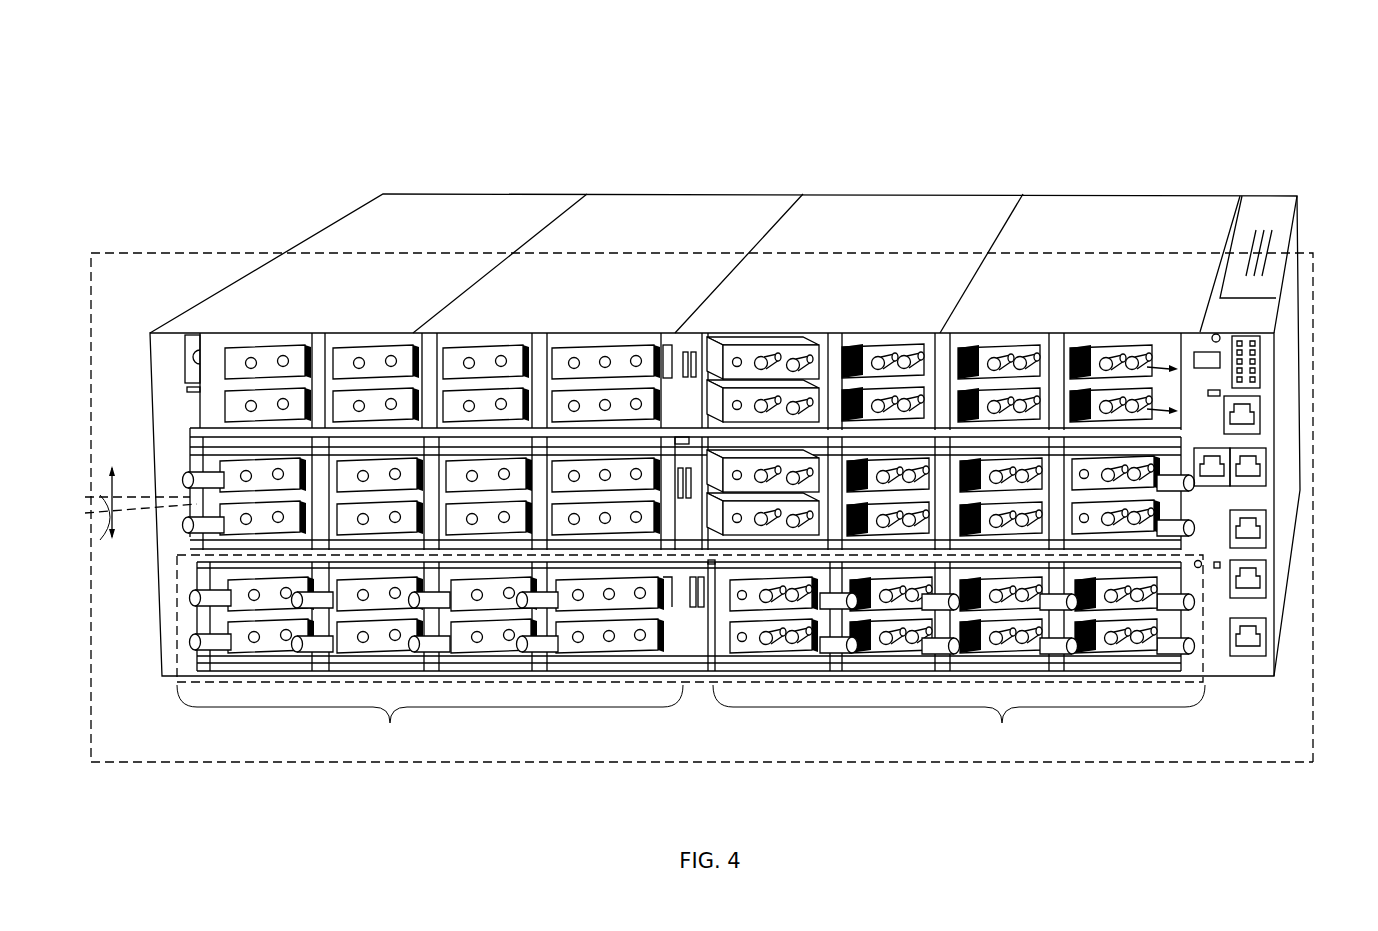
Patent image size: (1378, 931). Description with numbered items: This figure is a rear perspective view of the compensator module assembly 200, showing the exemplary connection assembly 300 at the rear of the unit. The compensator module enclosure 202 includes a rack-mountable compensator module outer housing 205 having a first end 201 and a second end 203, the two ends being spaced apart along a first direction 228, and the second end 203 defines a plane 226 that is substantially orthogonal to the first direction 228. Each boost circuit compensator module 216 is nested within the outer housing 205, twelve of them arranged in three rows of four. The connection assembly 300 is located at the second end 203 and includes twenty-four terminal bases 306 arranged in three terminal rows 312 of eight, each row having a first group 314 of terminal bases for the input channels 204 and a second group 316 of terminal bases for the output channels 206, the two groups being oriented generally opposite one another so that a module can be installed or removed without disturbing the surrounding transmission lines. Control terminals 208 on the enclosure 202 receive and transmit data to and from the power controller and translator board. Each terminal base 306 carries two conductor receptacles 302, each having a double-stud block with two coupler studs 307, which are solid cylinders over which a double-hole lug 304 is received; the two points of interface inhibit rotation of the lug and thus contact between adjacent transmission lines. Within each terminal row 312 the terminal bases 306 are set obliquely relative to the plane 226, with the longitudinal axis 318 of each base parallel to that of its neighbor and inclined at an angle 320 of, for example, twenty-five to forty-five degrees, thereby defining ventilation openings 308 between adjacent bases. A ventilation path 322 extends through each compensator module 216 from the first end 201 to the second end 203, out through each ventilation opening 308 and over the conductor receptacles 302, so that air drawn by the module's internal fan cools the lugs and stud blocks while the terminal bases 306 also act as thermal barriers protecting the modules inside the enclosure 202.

The compensator module assembly 200 is at (1143, 72).
The first end 201 is at (932, 175).
The compensator module enclosure 202 is at (1283, 298).
The second end 203 is at (693, 686).
The input channels 204 is at (1008, 472).
The compensator module outer housing 205 is at (748, 232).
The output channels 206 is at (310, 517).
The control terminals 208 is at (1250, 530).
The boost circuit compensator module 216 is at (1008, 172).
The plane 226 is at (1098, 767).
The first direction 228 is at (1313, 763).
The connection assembly 300 is at (145, 620).
The conductor receptacles 302 is at (1003, 350).
The double-hole lug 304 is at (1188, 540).
The terminal base 306 is at (363, 627).
The coupler stud 307 is at (1130, 357).
The ventilation openings 308 is at (661, 362).
The terminal rows 312 is at (177, 596).
The first group 314 is at (959, 720).
The second group 316 is at (430, 720).
The longitudinal axis 318 is at (122, 533).
The angle 320 is at (117, 505).
The ventilation path 322 is at (1162, 412).